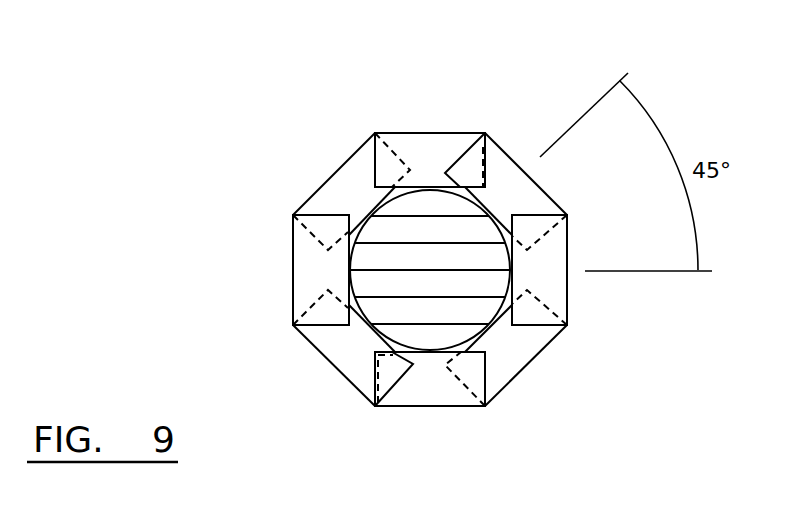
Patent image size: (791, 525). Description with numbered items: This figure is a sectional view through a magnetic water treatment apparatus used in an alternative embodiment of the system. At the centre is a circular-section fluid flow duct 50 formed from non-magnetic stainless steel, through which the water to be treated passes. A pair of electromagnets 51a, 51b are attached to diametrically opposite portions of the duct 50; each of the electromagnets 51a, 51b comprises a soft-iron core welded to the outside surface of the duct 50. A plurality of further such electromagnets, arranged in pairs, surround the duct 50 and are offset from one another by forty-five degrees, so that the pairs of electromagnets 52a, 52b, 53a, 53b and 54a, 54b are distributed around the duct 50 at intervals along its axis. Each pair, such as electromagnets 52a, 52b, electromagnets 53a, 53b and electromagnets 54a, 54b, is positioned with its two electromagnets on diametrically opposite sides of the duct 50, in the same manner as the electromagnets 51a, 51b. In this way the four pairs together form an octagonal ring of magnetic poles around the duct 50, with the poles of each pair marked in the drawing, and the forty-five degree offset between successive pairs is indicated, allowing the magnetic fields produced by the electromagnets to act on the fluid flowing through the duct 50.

The fluid flow duct 50 is at (368, 231).
The electromagnet 51a is at (293, 248).
The electromagnet 51b is at (559, 294).
The electromagnet 52a is at (358, 372).
The electromagnet 52b is at (502, 152).
The electromagnet 53a is at (447, 395).
The electromagnet 53b is at (438, 142).
The electromagnet 54a is at (537, 342).
The electromagnet 54b is at (360, 158).